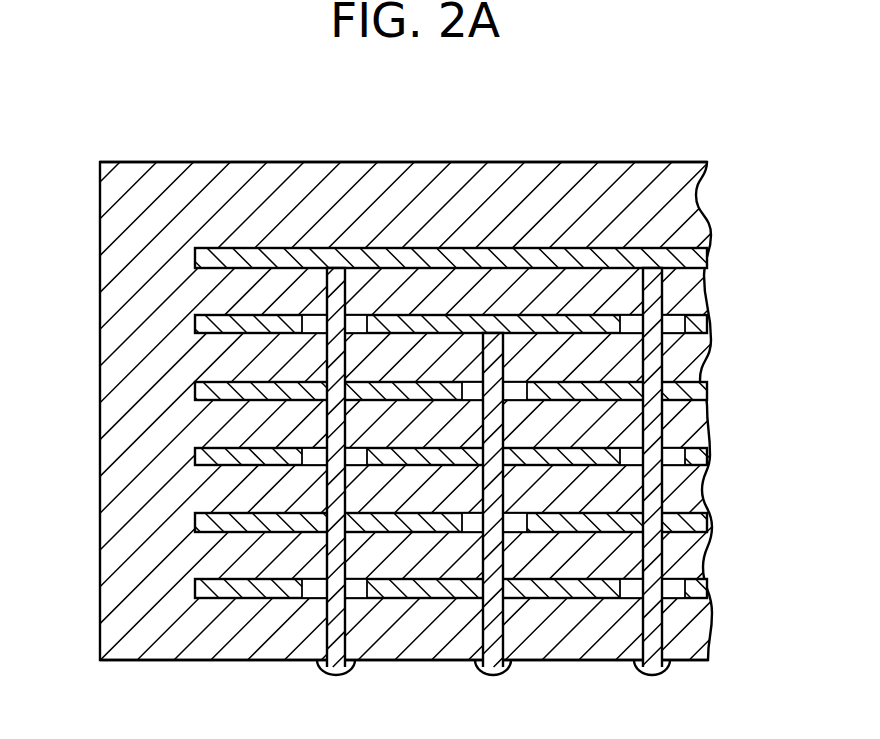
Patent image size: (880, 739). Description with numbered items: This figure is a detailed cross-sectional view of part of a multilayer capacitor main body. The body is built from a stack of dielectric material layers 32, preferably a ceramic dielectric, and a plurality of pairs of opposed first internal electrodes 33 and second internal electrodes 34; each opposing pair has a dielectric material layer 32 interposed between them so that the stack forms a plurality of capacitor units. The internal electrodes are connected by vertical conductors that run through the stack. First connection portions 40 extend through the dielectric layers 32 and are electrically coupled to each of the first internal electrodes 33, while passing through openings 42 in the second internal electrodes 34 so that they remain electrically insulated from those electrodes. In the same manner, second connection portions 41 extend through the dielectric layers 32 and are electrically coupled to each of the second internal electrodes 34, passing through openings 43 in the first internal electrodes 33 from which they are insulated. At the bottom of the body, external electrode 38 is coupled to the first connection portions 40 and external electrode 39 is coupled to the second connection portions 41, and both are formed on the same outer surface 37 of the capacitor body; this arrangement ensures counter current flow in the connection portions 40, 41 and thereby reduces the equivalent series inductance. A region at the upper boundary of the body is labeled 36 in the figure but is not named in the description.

The dielectric material layers 32 is at (580, 552).
The first internal electrodes 33 is at (195, 326).
The second internal electrodes 34 is at (195, 258).
The top surface 36 is at (657, 163).
The outer surface 37 is at (690, 662).
The external electrode 38 is at (485, 668).
The external electrode 39 is at (320, 668).
The first connection portions 40 is at (483, 353).
The second connection portions 41 is at (325, 283).
The openings 42 is at (665, 456).
The openings 43 is at (511, 388).